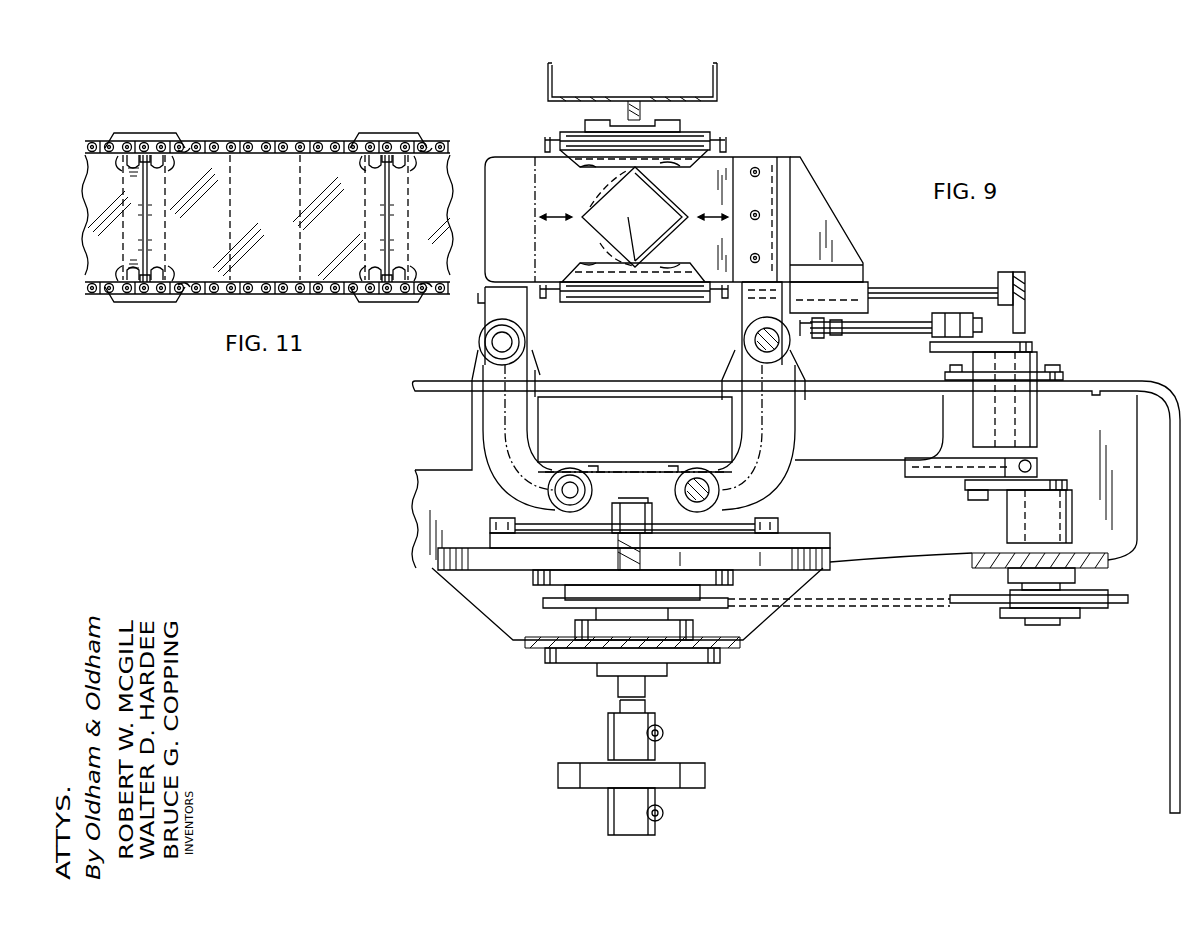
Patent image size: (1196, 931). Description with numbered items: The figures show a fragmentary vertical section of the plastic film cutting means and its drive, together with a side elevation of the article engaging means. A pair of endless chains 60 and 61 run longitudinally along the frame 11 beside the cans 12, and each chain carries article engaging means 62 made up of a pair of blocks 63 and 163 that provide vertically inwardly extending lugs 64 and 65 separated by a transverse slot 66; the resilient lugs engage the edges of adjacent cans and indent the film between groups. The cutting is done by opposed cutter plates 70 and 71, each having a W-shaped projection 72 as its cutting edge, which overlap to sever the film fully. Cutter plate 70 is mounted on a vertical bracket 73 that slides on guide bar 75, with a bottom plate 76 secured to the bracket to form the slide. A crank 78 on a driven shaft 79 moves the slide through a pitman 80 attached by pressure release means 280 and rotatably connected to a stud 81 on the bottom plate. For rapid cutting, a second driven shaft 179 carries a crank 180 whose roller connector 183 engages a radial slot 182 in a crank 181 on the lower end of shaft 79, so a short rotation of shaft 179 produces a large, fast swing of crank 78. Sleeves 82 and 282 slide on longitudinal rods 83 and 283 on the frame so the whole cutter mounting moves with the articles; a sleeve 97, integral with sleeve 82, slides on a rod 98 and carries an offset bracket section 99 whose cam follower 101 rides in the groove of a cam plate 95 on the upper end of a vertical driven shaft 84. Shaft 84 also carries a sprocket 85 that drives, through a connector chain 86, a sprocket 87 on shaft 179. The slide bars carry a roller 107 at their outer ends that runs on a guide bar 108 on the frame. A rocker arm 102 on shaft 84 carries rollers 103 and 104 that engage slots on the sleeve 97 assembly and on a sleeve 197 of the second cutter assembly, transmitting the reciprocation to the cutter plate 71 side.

In FIG. 9, the frame 11 is at (1172, 688).
In FIG. 11, the cans 12 is at (258, 146).
In FIG. 11, the endless chain 60 is at (318, 140).
In FIG. 9, the endless chain 60 is at (730, 135).
In FIG. 11, the endless chain 61 is at (258, 296).
In FIG. 9, the endless chain 61 is at (722, 302).
In FIG. 11, the article engaging means 62 is at (160, 136).
In FIG. 9, the article engaging means 62 is at (590, 168).
In FIG. 11, the article engaging block 63 is at (120, 160).
In FIG. 11, the lug 64 is at (130, 168).
In FIG. 11, the lug 65 is at (158, 165).
In FIG. 9, the lug 65 is at (670, 163).
In FIG. 11, the slot 66 is at (144, 140).
In FIG. 9, the slot 66 is at (578, 168).
In FIG. 11, the article engaging block 163 is at (195, 150).
In FIG. 9, the cutter plate 70 is at (728, 162).
In FIG. 9, the cutter plate 71 is at (604, 213).
In FIG. 9, the W-shaped projection 72 is at (658, 246).
In FIG. 9, the bracket 73 is at (835, 225).
In FIG. 9, the guide bar 75 is at (945, 290).
In FIG. 9, the bottom plate 76 is at (866, 290).
In FIG. 9, the crank 78 is at (942, 347).
In FIG. 9, the driven shaft 79 is at (1018, 423).
In FIG. 9, the pitman 80 is at (887, 336).
In FIG. 9, the stud 81 is at (810, 340).
In FIG. 9, the sleeve 82 is at (745, 350).
In FIG. 9, the rod 83 is at (745, 345).
In FIG. 9, the driven shaft 84 is at (647, 686).
In FIG. 9, the sprocket 85 is at (720, 608).
In FIG. 9, the connector chain 86 is at (898, 605).
In FIG. 9, the sprocket 87 is at (1118, 603).
In FIG. 9, the cam plate 95 is at (805, 548).
In FIG. 9, the sleeve 97 is at (697, 466).
In FIG. 9, the rod 98 is at (610, 478).
In FIG. 9, the bracket section 99 is at (614, 518).
In FIG. 9, the cam follower 101 is at (616, 553).
In FIG. 9, the rocker arm 102 is at (525, 548).
In FIG. 9, the roller member 103 is at (775, 520).
In FIG. 9, the roller member 104 is at (492, 526).
In FIG. 9, the roller 107 is at (1025, 283).
In FIG. 9, the guide bar 108 is at (1025, 303).
In FIG. 9, the driven shaft 179 is at (1055, 522).
In FIG. 9, the crank 180 is at (1000, 490).
In FIG. 9, the crank 181 is at (917, 478).
In FIG. 9, the slot 182 is at (947, 478).
In FIG. 9, the roller connector 183 is at (975, 500).
In FIG. 9, the sleeve 197 is at (585, 470).
In FIG. 9, the securing means 280 is at (950, 322).
In FIG. 9, the sleeve 282 is at (522, 348).
In FIG. 9, the rod 283 is at (515, 345).